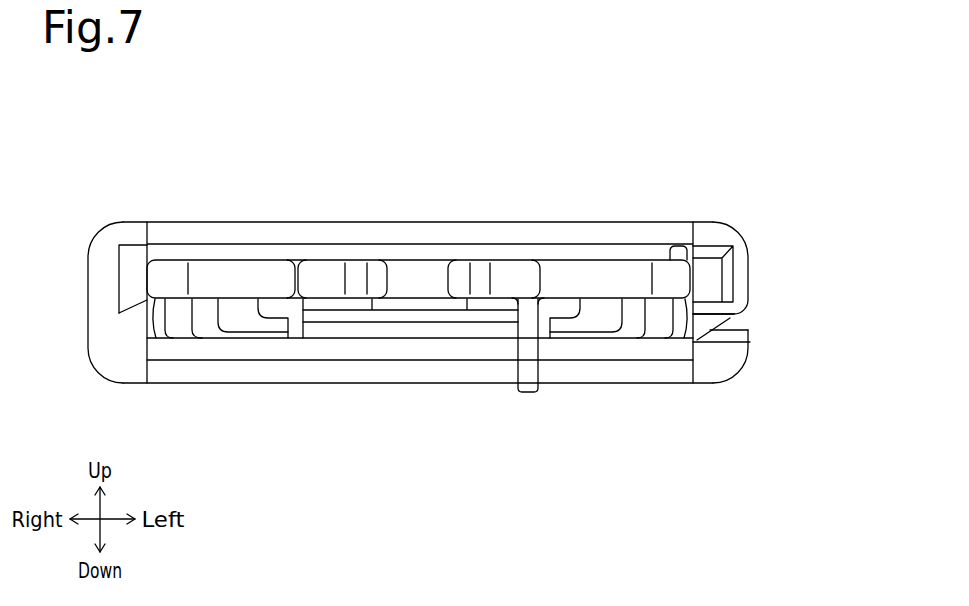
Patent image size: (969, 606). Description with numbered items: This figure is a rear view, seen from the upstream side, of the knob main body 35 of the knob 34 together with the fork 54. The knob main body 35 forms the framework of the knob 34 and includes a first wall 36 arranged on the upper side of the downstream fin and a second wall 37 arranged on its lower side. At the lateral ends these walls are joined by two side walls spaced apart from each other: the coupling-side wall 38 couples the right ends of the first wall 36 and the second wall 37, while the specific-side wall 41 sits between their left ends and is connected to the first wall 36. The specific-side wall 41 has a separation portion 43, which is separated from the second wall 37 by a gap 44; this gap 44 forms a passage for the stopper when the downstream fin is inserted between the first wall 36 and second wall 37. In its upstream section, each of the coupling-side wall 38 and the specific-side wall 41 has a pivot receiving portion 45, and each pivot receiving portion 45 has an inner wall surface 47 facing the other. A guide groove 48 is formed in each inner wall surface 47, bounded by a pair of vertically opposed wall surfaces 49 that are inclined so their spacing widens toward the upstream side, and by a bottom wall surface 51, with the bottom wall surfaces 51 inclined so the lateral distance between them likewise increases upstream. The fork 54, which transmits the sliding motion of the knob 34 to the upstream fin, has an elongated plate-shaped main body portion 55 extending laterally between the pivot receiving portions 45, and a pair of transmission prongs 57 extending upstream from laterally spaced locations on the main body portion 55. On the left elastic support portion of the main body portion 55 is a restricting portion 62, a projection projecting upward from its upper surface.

The knob 34 is at (418, 302).
The knob main body 35 is at (493, 230).
The first wall 36 is at (418, 280).
The second wall 37 is at (567, 375).
The coupling-side wall 38 is at (97, 258).
The specific-side wall 41 is at (728, 363).
The separation portion 43 is at (708, 378).
The gap 44 is at (750, 322).
The pivot receiving portion 45 is at (412, 302).
The inner wall surface 47 is at (158, 236).
The guide groove 48 is at (130, 291).
The opposed wall surfaces 49 is at (140, 252).
The bottom wall surface 51 is at (445, 306).
The fork 54 is at (260, 265).
The main body portion 55 is at (418, 238).
The transmission prongs 57 is at (480, 272).
The restricting portion 62 is at (680, 247).